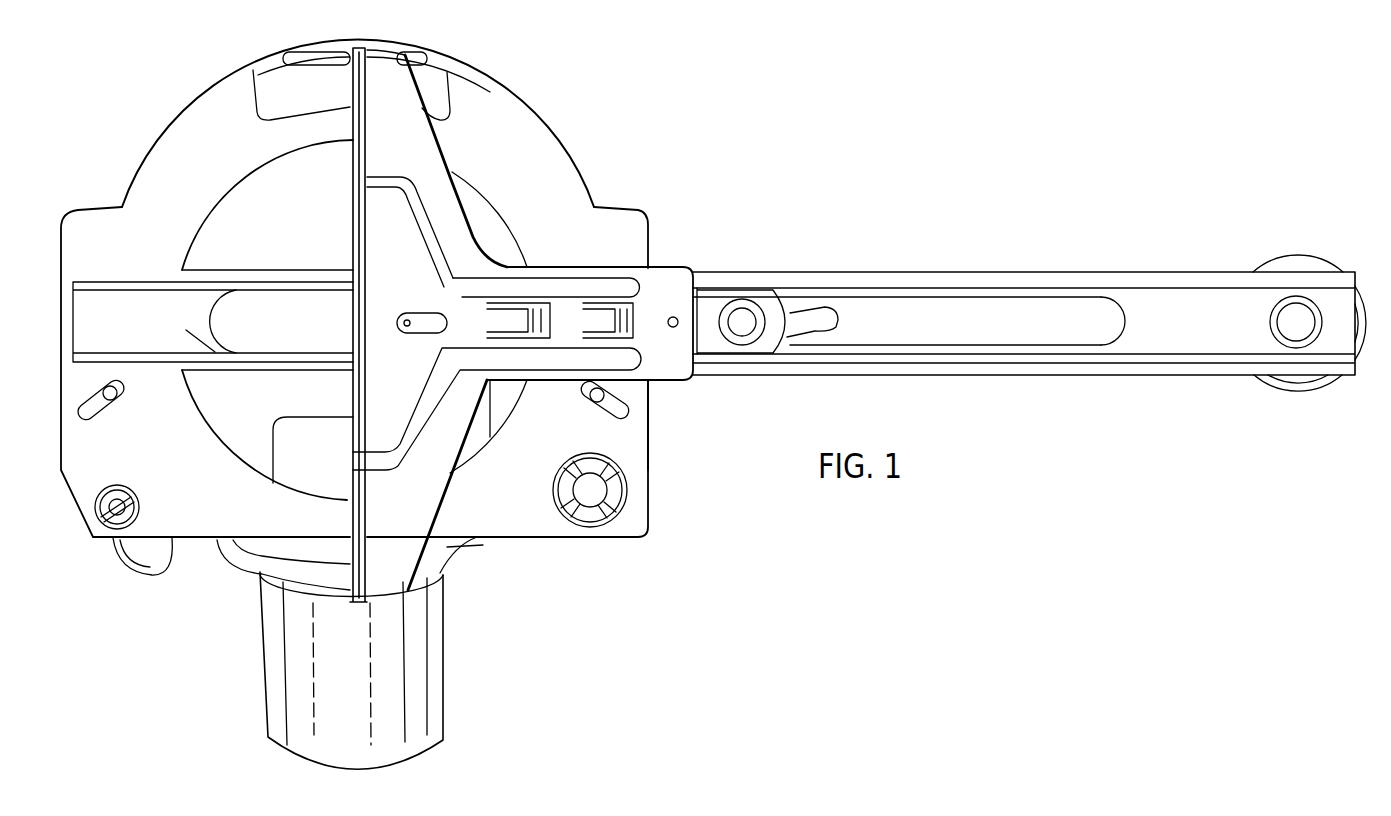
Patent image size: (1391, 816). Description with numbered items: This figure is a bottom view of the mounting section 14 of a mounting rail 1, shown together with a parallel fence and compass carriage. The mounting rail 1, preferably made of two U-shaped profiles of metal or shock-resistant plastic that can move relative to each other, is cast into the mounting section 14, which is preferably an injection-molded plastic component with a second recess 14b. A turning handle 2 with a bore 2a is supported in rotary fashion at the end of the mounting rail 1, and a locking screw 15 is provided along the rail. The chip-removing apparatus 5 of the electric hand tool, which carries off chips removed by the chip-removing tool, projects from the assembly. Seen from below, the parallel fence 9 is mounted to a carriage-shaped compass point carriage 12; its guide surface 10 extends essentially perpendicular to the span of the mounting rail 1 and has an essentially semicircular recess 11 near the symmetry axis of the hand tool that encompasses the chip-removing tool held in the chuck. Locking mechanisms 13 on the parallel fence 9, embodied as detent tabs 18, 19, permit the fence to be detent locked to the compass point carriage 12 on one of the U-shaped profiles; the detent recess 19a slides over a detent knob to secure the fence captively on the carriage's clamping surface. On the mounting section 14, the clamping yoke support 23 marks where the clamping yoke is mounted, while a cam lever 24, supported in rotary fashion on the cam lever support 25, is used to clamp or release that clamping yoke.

The mounting rail 1 is at (948, 262).
The turning handle 2 is at (1293, 380).
The bore 2a is at (1297, 317).
The chip-removing apparatus 5 is at (428, 707).
The parallel fence 9 is at (422, 154).
The guide surface 10 is at (356, 212).
The recess for chip-removing tool 11 is at (362, 330).
The compass point carriage 12 is at (710, 300).
The parallel fence locking mechanism 13 is at (557, 277).
The mounting section 14 is at (524, 517).
The second recess 14b is at (128, 283).
The locking screw 15 is at (815, 312).
The parallel fence detent tab 18 is at (521, 318).
The parallel fence detent tab 19 is at (642, 323).
The detent recess 19a is at (682, 330).
The clamping yoke support 23 is at (613, 492).
The cam lever 24 is at (163, 570).
The cam lever support 25 is at (137, 491).